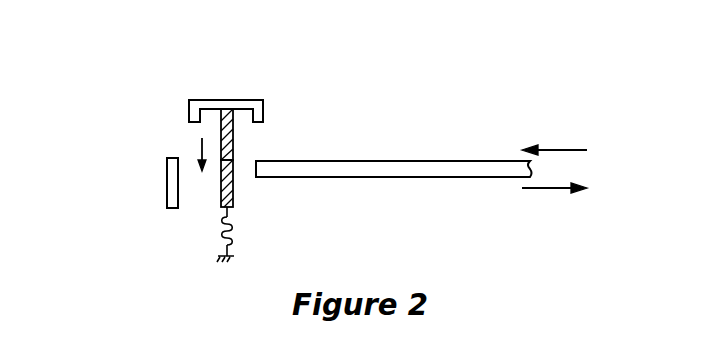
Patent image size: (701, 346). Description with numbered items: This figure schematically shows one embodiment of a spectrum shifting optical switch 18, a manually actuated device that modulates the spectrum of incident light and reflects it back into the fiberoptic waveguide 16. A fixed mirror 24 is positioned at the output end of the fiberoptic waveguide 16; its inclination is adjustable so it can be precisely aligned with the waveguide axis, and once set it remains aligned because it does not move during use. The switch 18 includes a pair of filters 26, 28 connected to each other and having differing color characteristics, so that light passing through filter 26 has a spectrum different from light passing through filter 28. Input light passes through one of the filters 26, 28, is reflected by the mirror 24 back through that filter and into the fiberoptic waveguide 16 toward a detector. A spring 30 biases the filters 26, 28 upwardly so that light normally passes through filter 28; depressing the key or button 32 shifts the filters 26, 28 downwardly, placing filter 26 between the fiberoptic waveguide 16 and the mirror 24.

The fiberoptic waveguide 16 is at (367, 161).
The optical switch 18 is at (283, 73).
The fixed mirror 24 is at (167, 168).
The filter 26 is at (233, 115).
The filter 28 is at (233, 170).
The spring 30 is at (232, 238).
The key or button 32 is at (266, 117).